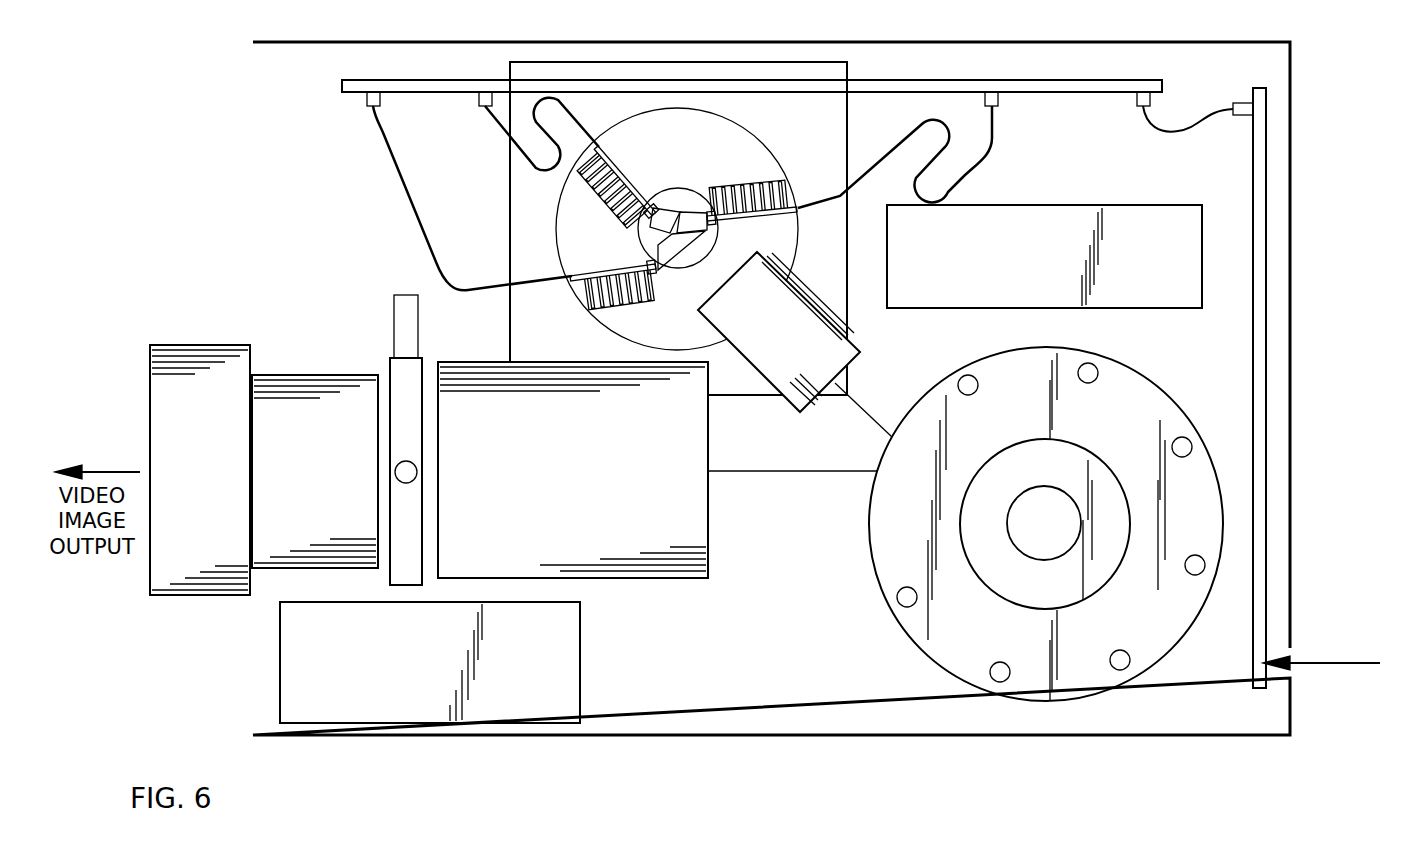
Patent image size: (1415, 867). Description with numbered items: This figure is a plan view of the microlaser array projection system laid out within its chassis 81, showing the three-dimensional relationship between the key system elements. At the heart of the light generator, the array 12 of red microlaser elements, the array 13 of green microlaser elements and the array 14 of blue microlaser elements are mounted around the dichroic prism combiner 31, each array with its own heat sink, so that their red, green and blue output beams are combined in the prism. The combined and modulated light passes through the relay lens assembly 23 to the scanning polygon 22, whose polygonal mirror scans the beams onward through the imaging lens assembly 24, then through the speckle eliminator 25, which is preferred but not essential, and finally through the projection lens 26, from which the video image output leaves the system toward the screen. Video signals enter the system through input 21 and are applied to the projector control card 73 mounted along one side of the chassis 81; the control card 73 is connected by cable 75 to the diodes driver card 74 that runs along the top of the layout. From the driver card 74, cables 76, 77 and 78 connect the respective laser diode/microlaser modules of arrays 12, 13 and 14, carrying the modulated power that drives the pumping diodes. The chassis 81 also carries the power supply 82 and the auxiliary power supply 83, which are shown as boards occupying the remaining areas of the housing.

The array of red microlaser elements 12 is at (753, 212).
The array of green microlaser elements 13 is at (630, 185).
The array of blue microlaser elements 14 is at (613, 270).
The cable 21 is at (1330, 662).
The scanning polygon 22 is at (1137, 392).
The relay lens assembly 23 is at (765, 373).
The imaging lens assembly 24 is at (677, 570).
The speckle eliminator 25 is at (392, 365).
The projection lens 26 is at (190, 590).
The dichroic prism combiner 31 is at (683, 253).
The projector control card 73 is at (1268, 407).
The diodes driver card 74 is at (1072, 93).
The cable 75 is at (1173, 132).
The cable 76 is at (958, 175).
The cable 77 is at (504, 130).
The cable 78 is at (397, 177).
The chassis 81 is at (1202, 712).
The power supply 82 is at (917, 304).
The auxiliary power supply 83 is at (574, 678).